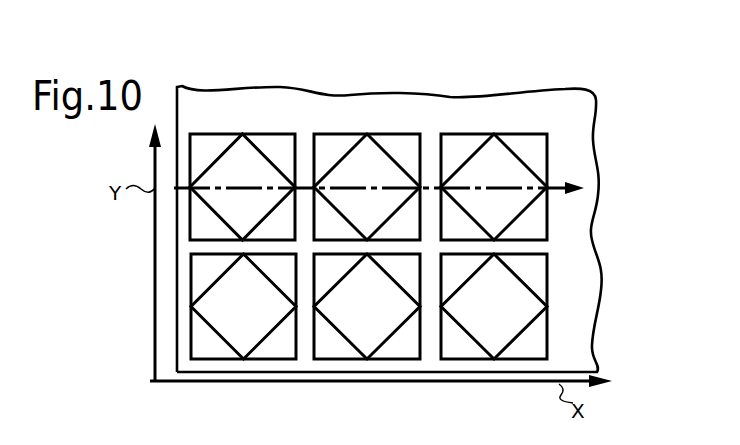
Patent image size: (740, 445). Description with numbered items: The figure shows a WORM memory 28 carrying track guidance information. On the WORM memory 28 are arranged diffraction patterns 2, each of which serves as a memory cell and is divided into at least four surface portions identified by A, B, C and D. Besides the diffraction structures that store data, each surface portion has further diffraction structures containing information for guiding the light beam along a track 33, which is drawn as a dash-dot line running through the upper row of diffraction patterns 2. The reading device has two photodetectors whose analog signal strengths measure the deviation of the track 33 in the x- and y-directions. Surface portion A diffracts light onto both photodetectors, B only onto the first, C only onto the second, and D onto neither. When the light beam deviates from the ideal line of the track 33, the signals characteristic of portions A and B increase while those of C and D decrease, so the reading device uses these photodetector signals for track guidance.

The diffraction pattern 2 is at (343, 133).
The WORM memory 28 is at (585, 233).
The track 33 is at (558, 182).